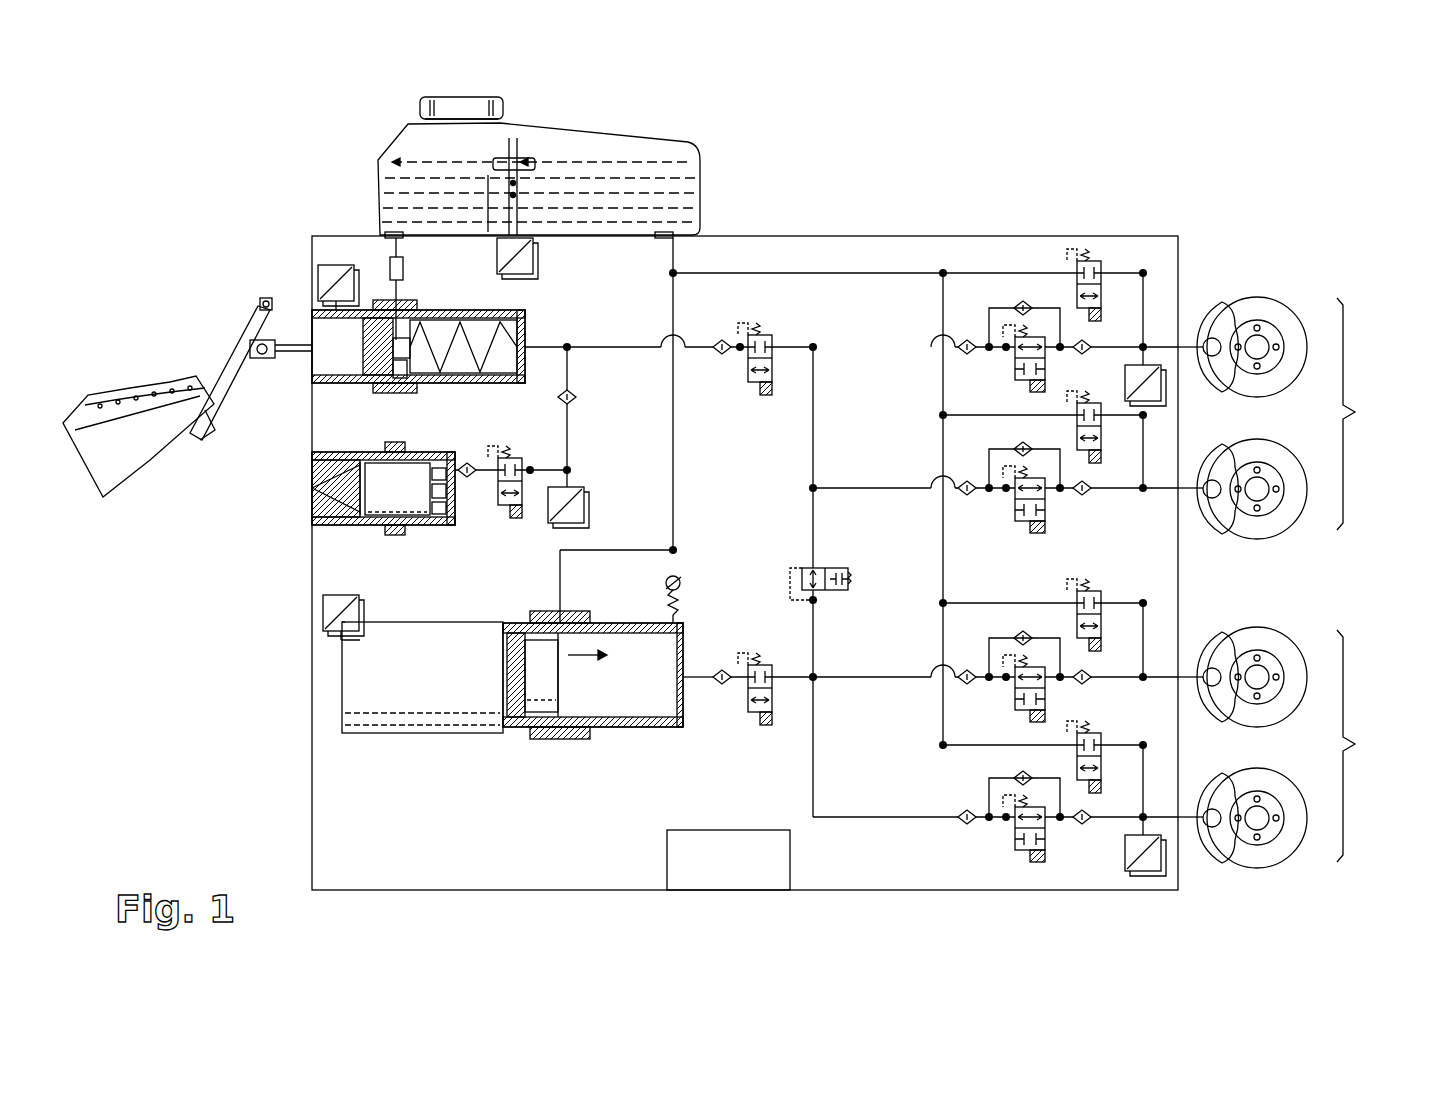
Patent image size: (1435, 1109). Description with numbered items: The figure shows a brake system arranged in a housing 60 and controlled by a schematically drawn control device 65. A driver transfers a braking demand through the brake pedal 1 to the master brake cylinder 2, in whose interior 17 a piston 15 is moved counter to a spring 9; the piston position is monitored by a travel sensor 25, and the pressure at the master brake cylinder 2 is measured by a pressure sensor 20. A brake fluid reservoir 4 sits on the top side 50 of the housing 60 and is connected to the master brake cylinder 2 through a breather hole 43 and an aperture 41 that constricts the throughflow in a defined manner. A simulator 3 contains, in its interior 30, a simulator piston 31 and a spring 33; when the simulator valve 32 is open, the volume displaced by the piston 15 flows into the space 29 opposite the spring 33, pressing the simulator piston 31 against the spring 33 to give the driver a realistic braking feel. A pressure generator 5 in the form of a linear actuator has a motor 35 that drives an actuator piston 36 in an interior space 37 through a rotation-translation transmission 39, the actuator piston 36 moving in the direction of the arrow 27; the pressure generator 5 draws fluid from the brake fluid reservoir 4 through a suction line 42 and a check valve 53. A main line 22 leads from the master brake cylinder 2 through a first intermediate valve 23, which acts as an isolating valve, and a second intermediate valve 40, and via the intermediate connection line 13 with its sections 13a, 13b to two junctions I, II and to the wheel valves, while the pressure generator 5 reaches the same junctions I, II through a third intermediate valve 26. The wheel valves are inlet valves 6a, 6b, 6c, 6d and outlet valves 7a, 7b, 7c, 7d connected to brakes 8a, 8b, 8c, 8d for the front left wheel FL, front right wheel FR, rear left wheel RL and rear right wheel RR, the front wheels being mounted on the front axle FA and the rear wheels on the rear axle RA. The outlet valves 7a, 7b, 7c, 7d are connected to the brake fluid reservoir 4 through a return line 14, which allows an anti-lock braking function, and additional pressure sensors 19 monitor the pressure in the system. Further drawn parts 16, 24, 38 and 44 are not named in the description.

The brake pedal 1 is at (242, 372).
The master brake cylinder 2 is at (426, 352).
The simulator 3 is at (375, 516).
The brake fluid reservoir 4 is at (688, 183).
The pressure generator 5 is at (475, 713).
The inlet valve 6a is at (1015, 362).
The inlet valve 6b is at (1015, 503).
The inlet valve 6c is at (1015, 692).
The inlet valve 6d is at (1015, 833).
The outlet valve 7a is at (1102, 290).
The outlet valve 7b is at (1102, 432).
The outlet valve 7c is at (1102, 620).
The outlet valve 7d is at (1102, 762).
The first brake 8a is at (1210, 335).
The second brake 8b is at (1210, 477).
The third brake 8c is at (1210, 665).
The fourth brake 8d is at (1210, 805).
The spring 9 is at (480, 375).
The intermediate connection line 13 is at (836, 580).
The intermediate connection line 13a is at (817, 548).
The intermediate connection line 13b is at (816, 612).
The return line 14 is at (795, 277).
The piston 15 is at (382, 300).
The master cylinder housing 16 is at (330, 420).
The interior 17 is at (500, 312).
The additional pressure sensors 19 is at (1125, 383).
The pressure sensor 20 is at (578, 487).
The main line 22 is at (622, 352).
The first intermediate valve 23 is at (773, 370).
The push rod 24 is at (290, 352).
The travel sensor 25 is at (316, 285).
The third intermediate valve 26 is at (778, 702).
The arrow 27 is at (585, 662).
The space 29 is at (452, 500).
The interior 30 is at (355, 517).
The simulator piston 31 is at (418, 500).
The simulator valve 32 is at (522, 495).
The spring 33 is at (312, 508).
The motor 35 is at (397, 705).
The actuator piston 36 is at (535, 705).
The interior space 37 is at (640, 705).
The plunger outlet 38 is at (704, 682).
The rotation-translation transmission 39 is at (510, 660).
The second intermediate valve 40 is at (805, 570).
The aperture 41 is at (403, 268).
The suction line 42 is at (668, 430).
The breather hole 43 is at (420, 318).
The rotor position sensor 44 is at (321, 612).
The top side 50 is at (540, 241).
The check valve 53 is at (682, 578).
The housing 60 is at (1072, 236).
The control device 65 is at (723, 860).
The junction I is at (822, 485).
The junction II is at (822, 688).
The front left wheel FL is at (1297, 312).
The front right wheel FR is at (1297, 455).
The rear left wheel RL is at (1297, 640).
The rear right wheel RR is at (1297, 782).
The front axle FA is at (1373, 414).
The rear axle RA is at (1374, 746).